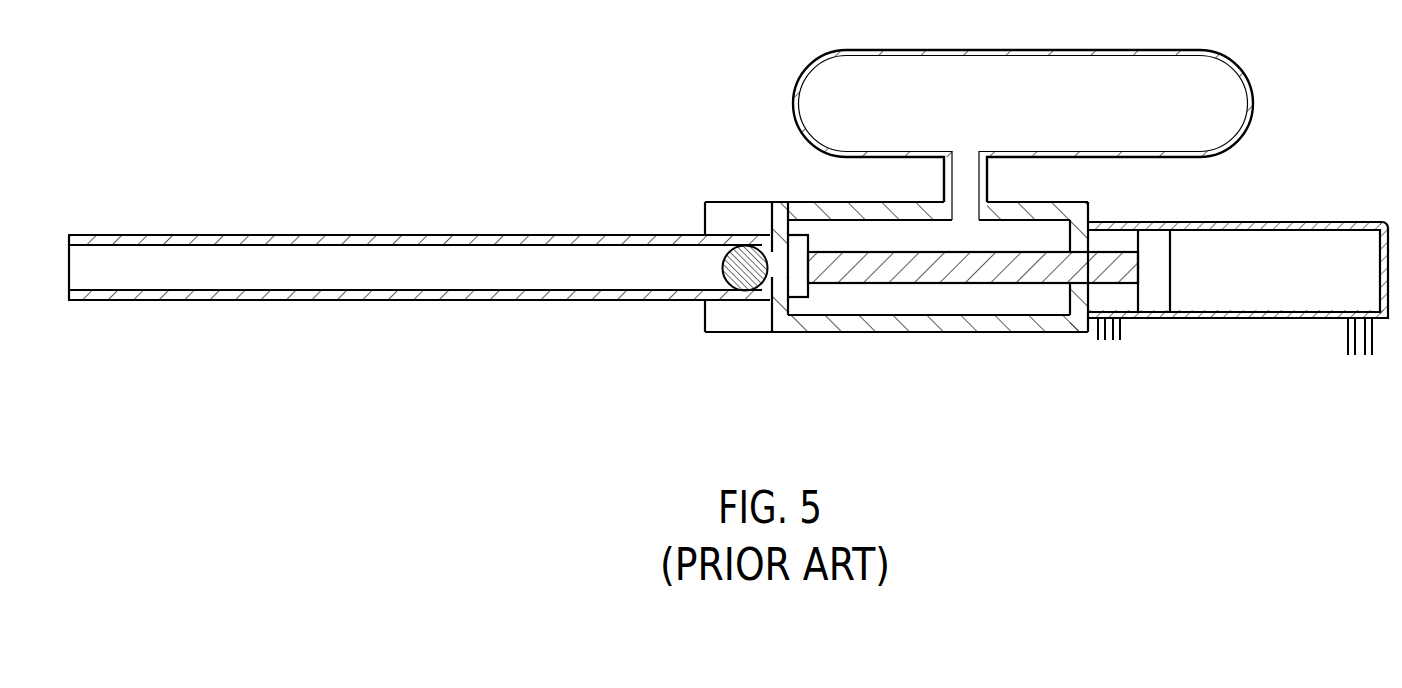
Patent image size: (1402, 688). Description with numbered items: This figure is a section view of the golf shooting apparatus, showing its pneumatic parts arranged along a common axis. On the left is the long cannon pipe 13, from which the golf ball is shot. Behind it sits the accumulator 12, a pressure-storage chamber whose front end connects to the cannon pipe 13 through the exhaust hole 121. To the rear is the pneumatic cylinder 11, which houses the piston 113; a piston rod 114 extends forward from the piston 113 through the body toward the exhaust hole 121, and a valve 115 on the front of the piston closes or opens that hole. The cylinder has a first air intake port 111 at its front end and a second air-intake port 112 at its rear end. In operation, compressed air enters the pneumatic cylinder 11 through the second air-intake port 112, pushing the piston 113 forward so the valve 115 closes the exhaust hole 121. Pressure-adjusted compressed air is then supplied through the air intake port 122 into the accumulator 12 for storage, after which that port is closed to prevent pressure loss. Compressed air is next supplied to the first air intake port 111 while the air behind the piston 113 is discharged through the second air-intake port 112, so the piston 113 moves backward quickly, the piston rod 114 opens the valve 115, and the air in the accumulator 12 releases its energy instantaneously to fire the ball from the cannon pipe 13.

The pneumatic cylinder 11 is at (1337, 222).
The accumulator 12 is at (1023, 50).
The cannon pipe 13 is at (633, 235).
The first air intake port 111 is at (1120, 338).
The second air-intake port 112 is at (1357, 332).
The piston 113 is at (1166, 232).
The shaft 114 is at (998, 280).
The stop block 115 is at (792, 298).
The exhaust hole 121 is at (776, 278).
The air intake port 122 is at (878, 320).